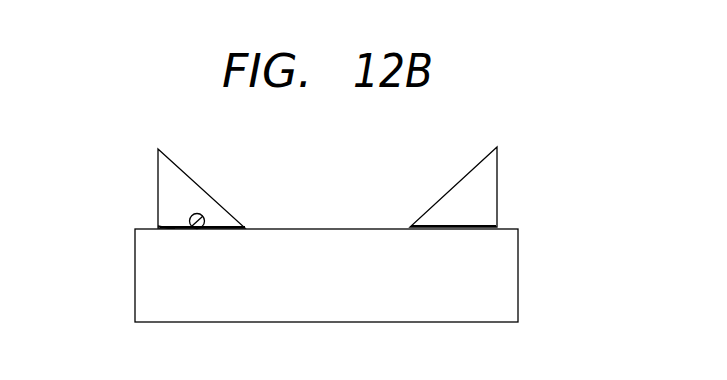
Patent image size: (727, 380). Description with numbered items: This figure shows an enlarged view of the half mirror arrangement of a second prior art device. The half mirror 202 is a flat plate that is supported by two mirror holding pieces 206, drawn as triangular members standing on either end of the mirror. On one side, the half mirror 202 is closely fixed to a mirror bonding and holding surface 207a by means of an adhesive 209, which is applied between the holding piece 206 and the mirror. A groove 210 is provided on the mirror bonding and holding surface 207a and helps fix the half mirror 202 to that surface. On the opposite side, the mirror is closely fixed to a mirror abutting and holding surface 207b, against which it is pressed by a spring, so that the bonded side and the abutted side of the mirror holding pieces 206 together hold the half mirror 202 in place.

The half mirror 202 is at (155, 277).
The mirror holding piece 206 is at (168, 176).
The mirror bonding and holding surface 207a is at (179, 227).
The mirror abutting and holding surface 207b is at (440, 226).
The adhesive 209 is at (168, 228).
The groove 210 is at (201, 216).